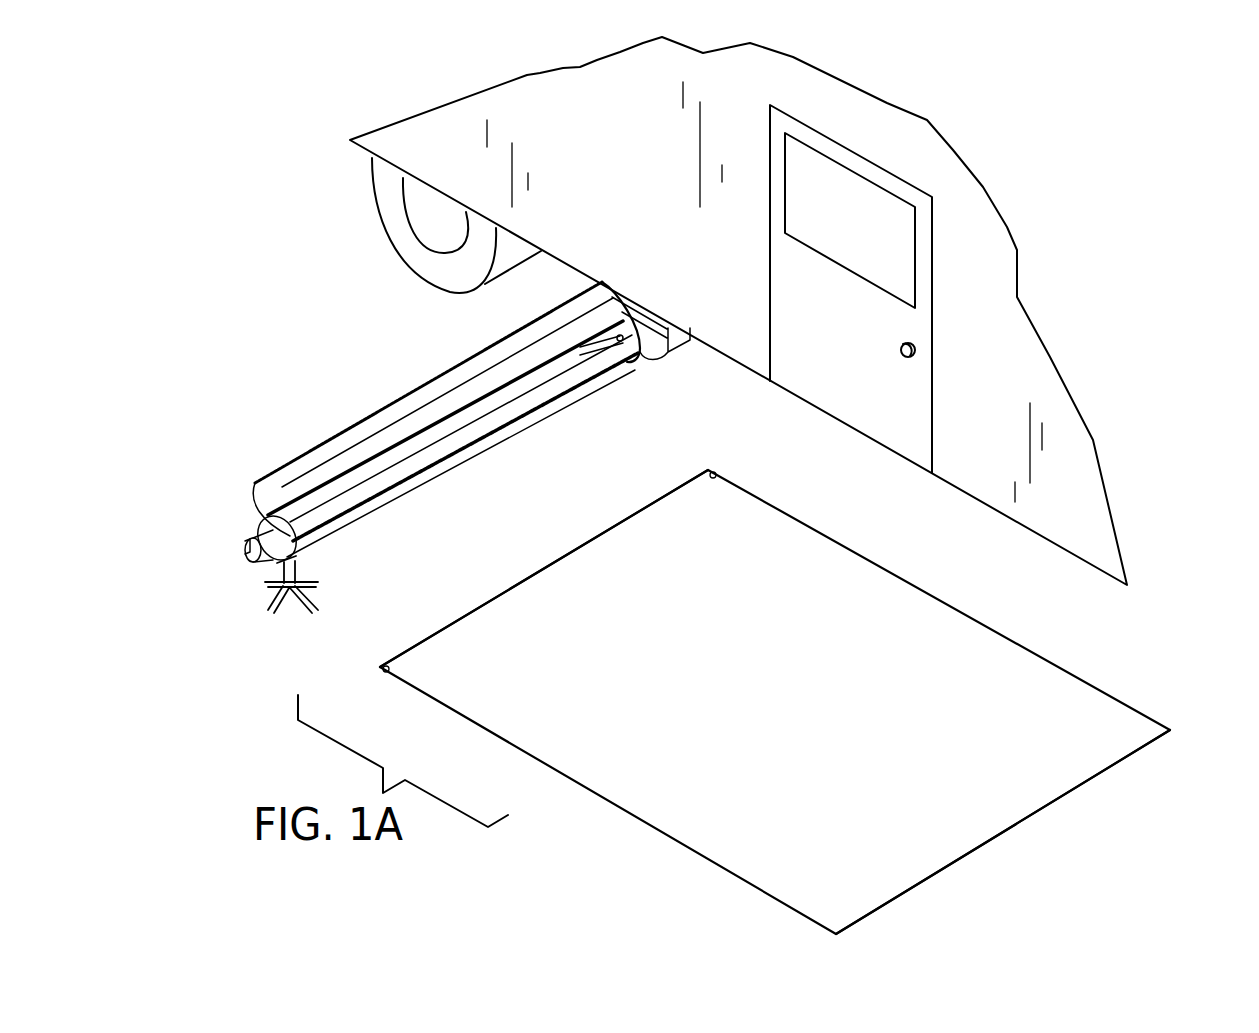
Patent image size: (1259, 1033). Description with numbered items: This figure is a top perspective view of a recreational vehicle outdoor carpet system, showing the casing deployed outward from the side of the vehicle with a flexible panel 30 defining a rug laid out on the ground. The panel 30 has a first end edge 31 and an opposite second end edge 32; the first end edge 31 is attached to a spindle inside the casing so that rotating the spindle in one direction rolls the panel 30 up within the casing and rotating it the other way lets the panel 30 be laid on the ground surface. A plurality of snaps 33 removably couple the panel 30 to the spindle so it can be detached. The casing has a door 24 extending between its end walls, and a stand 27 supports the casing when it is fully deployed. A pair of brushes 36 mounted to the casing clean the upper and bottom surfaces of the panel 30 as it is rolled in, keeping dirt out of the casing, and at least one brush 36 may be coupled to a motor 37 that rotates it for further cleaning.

The door 24 is at (280, 462).
The stand 27 is at (265, 609).
The flexible panel 30 is at (1170, 730).
The first end edge 31 is at (500, 592).
The second end edge 32 is at (1012, 823).
The snaps 33 is at (708, 470).
The brushes 36 is at (370, 414).
The motor 37 is at (276, 570).